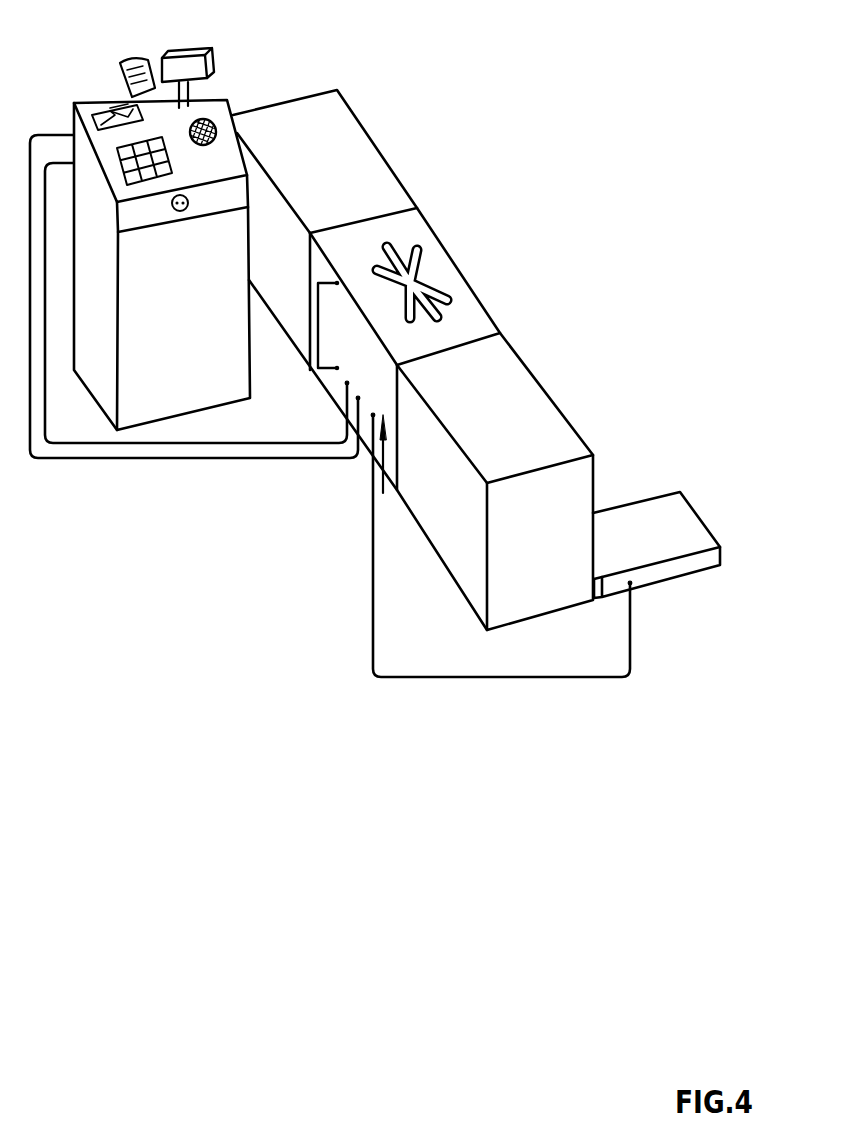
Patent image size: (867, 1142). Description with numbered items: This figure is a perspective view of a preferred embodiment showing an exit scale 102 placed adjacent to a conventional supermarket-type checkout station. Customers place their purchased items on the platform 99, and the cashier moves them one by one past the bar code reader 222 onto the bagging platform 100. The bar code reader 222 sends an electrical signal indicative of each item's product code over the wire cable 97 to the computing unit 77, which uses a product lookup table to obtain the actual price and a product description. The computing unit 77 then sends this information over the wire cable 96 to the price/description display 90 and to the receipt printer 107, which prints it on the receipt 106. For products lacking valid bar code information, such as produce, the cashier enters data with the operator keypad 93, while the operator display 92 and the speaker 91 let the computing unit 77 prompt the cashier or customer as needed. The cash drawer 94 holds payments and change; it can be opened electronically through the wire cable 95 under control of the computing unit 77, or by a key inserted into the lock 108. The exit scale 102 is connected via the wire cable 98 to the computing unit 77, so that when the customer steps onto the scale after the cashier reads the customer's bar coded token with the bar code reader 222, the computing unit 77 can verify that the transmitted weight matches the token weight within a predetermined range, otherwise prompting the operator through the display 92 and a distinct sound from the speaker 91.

The computing unit 77 is at (391, 468).
The price/description display 90 is at (198, 55).
The speaker 91 is at (213, 118).
The operator display 92 is at (88, 100).
The operator keypad 93 is at (143, 184).
The cash drawer 94 is at (240, 188).
The wire cable 95 is at (237, 443).
The wire cable 96 is at (236, 460).
The wire cable 97 is at (318, 286).
The wire cable 98 is at (373, 522).
The platform 99 is at (352, 132).
The bagging platform 100 is at (537, 405).
The exit scale 102 is at (688, 517).
The receipt 106 is at (147, 62).
The receipt printer 107 is at (118, 97).
The lock 108 is at (188, 207).
The bar code reader 222 is at (443, 265).